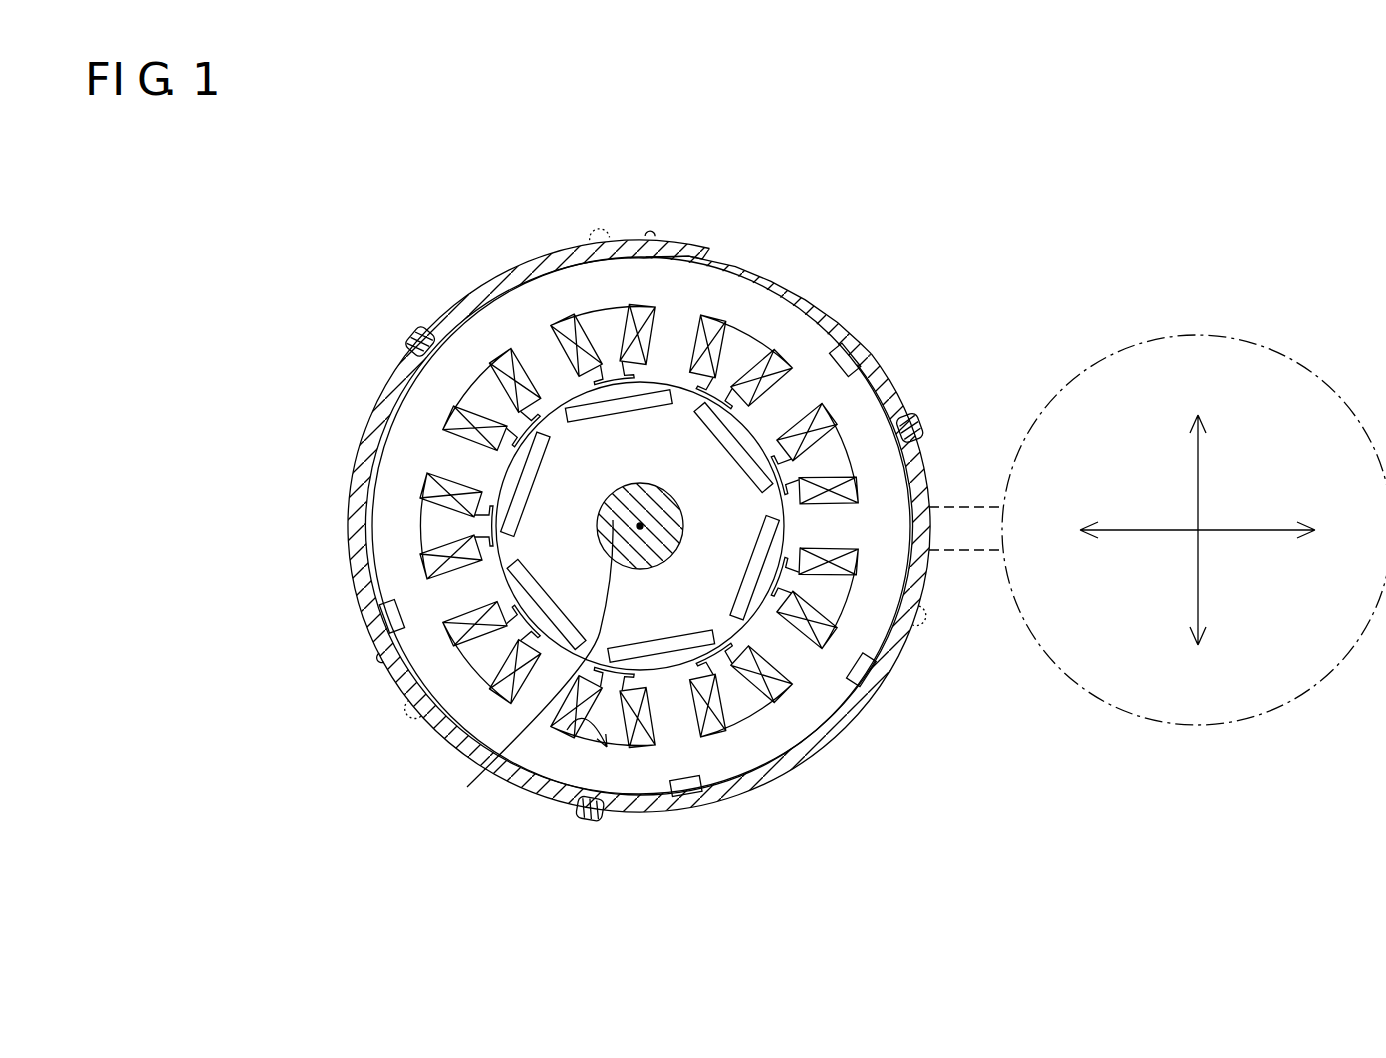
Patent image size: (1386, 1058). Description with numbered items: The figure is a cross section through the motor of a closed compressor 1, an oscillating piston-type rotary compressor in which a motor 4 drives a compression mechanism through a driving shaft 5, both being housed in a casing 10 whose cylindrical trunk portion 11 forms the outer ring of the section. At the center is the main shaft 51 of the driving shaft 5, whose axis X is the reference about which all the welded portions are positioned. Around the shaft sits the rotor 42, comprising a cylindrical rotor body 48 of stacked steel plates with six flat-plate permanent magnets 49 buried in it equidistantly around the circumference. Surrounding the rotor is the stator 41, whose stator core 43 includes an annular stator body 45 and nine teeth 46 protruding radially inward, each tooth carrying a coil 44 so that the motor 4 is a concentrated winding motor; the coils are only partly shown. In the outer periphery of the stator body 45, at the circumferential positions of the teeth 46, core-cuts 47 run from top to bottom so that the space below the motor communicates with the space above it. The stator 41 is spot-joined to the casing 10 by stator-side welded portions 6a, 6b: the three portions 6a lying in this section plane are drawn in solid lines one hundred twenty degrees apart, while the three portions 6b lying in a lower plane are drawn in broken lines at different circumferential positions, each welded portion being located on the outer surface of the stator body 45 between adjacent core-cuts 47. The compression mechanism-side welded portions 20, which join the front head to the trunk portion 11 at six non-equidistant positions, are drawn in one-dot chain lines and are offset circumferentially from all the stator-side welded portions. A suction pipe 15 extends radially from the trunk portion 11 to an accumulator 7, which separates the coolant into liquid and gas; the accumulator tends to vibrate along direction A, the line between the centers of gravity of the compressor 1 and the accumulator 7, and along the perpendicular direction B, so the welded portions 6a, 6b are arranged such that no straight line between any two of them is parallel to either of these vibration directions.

The compressor 1 is at (986, 114).
The motor 4 is at (409, 236).
The driving shaft 5 is at (617, 430).
The main shaft 51 is at (613, 520).
The stator-side welded portion 6a is at (413, 343).
The stator-side welded portion 6b is at (600, 240).
The accumulator 7 is at (1296, 362).
The casing 10 is at (667, 542).
The trunk portion 11 is at (837, 737).
The suction pipe 15 is at (975, 558).
The compression mechanism-side welded portion 20 is at (652, 238).
The stator 41 is at (640, 526).
The rotor 42 is at (512, 432).
The stator core 43 is at (258, 530).
The coil 44 is at (752, 675).
The stator body 45 is at (410, 612).
The tooth 46 is at (448, 458).
The core-cut 47 is at (870, 354).
The rotor body 48 is at (646, 610).
The magnet 49 is at (743, 573).
The axis X is at (534, 674).
The direction A is at (1147, 530).
The direction B is at (1198, 478).